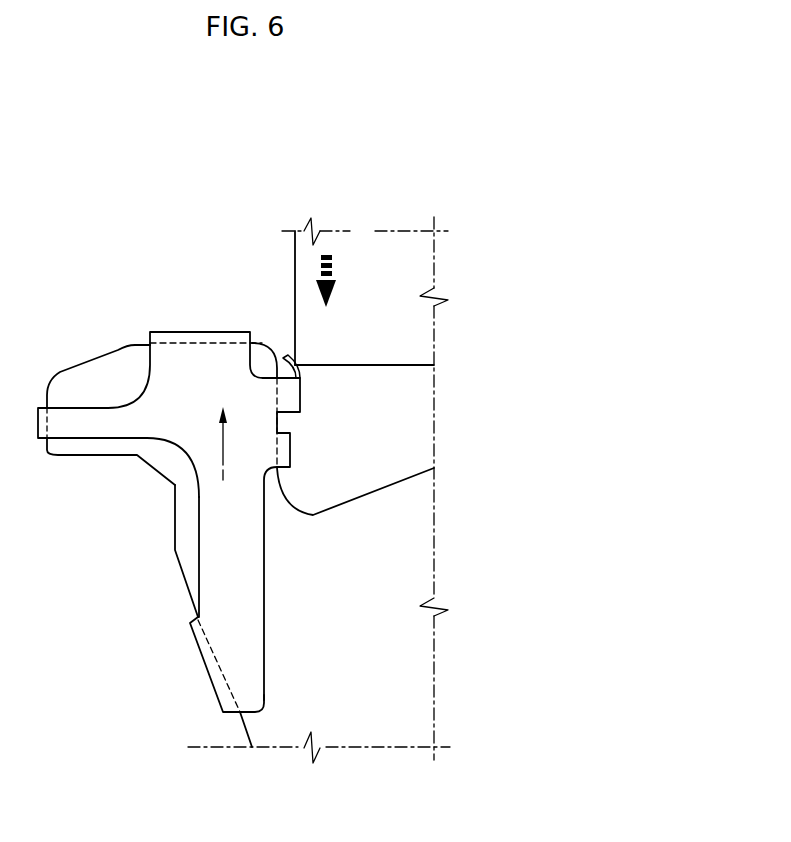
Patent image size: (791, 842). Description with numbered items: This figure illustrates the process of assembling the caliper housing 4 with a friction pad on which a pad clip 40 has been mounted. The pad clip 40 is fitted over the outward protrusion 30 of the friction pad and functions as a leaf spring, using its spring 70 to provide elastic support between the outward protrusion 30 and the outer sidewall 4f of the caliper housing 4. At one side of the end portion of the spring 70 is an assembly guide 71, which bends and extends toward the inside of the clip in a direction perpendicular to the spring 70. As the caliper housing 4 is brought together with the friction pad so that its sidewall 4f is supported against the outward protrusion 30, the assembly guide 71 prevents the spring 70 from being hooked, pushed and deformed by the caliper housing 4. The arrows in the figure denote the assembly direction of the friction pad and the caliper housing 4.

The caliper housing 4 is at (398, 240).
The outer sidewall 4f is at (290, 248).
The outward protrusion 30 is at (173, 532).
The pad clip 40 is at (140, 310).
The spring 70 is at (293, 400).
The assembly guide 71 is at (280, 362).